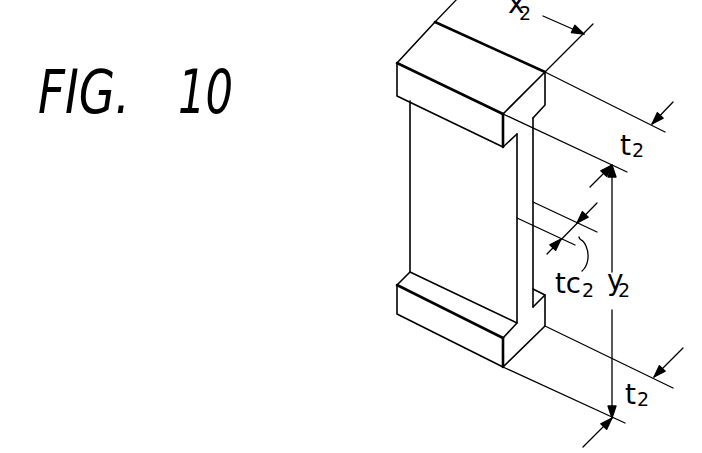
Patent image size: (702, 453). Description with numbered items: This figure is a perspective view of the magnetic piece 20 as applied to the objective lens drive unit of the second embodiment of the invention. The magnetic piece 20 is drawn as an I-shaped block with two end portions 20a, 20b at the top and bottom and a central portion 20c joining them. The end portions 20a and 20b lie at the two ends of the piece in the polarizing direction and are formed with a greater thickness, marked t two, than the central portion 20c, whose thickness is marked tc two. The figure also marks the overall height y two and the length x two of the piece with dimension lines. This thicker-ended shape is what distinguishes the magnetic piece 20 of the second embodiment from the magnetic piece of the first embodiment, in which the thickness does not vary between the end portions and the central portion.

The magnetic piece 20 is at (403, 152).
The end portion 20a is at (405, 83).
The end portion 20b is at (415, 303).
The central portion 20c is at (436, 194).